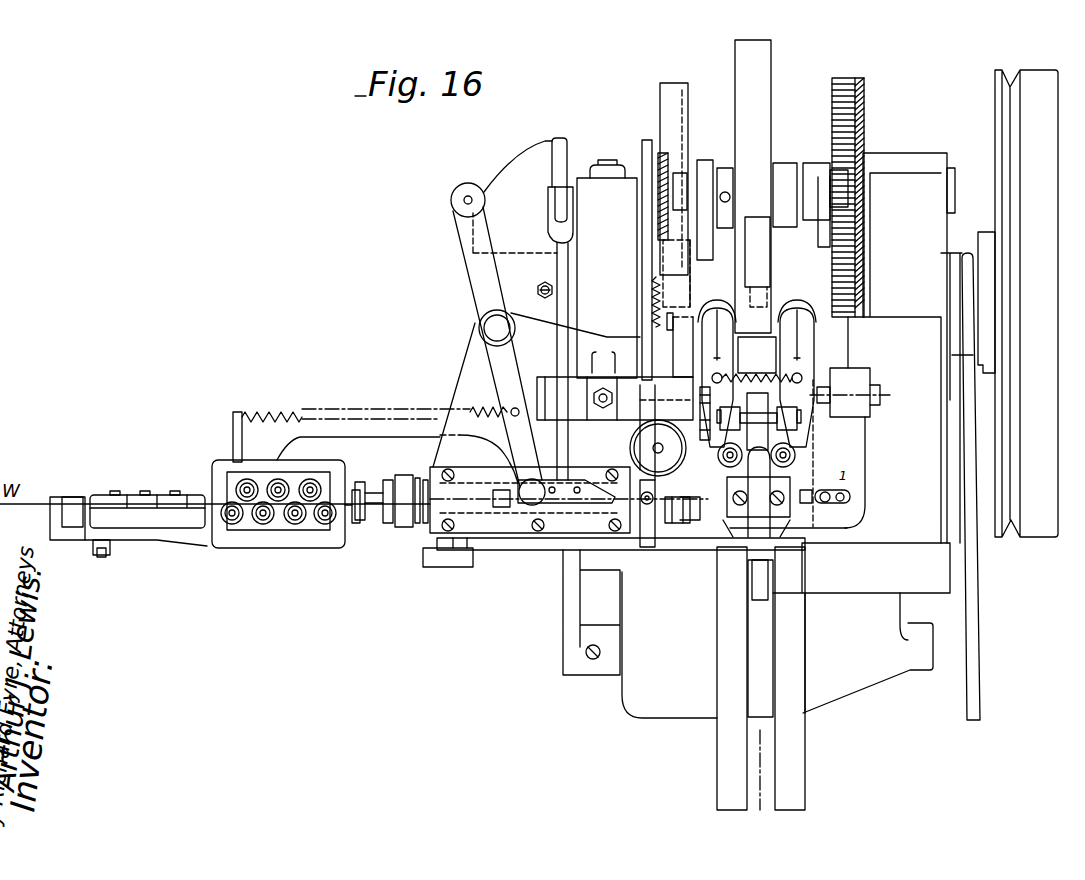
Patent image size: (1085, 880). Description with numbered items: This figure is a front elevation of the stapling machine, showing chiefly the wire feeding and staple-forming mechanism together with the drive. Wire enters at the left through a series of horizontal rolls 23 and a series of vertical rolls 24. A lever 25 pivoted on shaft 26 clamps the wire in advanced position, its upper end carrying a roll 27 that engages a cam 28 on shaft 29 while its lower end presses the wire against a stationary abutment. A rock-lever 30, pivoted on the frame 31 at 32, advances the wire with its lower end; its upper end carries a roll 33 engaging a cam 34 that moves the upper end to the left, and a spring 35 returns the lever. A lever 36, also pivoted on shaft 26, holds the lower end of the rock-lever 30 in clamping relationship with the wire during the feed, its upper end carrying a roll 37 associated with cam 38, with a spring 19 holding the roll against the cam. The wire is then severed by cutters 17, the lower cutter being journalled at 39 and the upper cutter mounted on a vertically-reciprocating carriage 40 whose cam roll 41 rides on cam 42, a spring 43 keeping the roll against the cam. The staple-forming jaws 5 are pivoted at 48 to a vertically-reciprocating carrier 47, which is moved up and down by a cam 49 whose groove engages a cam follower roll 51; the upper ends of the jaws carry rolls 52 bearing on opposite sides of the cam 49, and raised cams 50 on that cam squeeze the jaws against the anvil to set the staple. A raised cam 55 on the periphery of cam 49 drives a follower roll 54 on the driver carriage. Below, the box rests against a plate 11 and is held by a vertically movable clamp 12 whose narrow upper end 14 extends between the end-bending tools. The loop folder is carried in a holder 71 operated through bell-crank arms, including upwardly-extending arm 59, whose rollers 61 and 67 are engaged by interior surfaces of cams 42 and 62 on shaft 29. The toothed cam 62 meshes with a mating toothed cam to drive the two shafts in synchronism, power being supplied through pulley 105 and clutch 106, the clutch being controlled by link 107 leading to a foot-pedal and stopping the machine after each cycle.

The staple-forming jaws 5 is at (756, 492).
The plate 11 is at (548, 540).
The vertically movable clamp 12 is at (760, 673).
The narrow upper end 14 is at (762, 563).
The cutters 17 is at (762, 15).
The spring 19 is at (544, 284).
The horizontal rolls 23 is at (147, 489).
The vertical rolls 24 is at (283, 555).
The lever 25 is at (637, 237).
The shaft 26 is at (880, 396).
The roll 27 is at (650, 187).
The cam 28 is at (653, 137).
The shaft 29 is at (955, 181).
The rock-lever 30 is at (475, 272).
The frame 31 is at (470, 357).
The pivot 32 is at (490, 325).
The roll 33 is at (468, 182).
The cam 34 is at (525, 160).
The spring 35 is at (290, 414).
The lever 36 is at (562, 348).
The roll 37 is at (562, 205).
The cam 38 is at (560, 138).
The journal 39 is at (688, 525).
The vertically-reciprocating carriage 40 is at (700, 310).
The cam roll 41 is at (680, 345).
The cam 42 is at (678, 273).
The spring 43 is at (650, 306).
The vertically-reciprocating carrier 47 is at (760, 443).
The pivot 48 is at (797, 462).
The cam 49 is at (753, 186).
The raised cams 50 is at (735, 268).
The cam follower roll 51 is at (775, 283).
The rolls 52 is at (757, 341).
The follower roll 54 is at (755, 362).
The raised cam 55 is at (752, 213).
The upwardly-extending arm 59 is at (818, 178).
The roller 61 is at (688, 176).
The cam 62 is at (832, 96).
The roller 67 is at (842, 186).
The holder 71 is at (780, 352).
The pulley 105 is at (1020, 540).
The clutch 106 is at (958, 253).
The link 107 is at (980, 648).